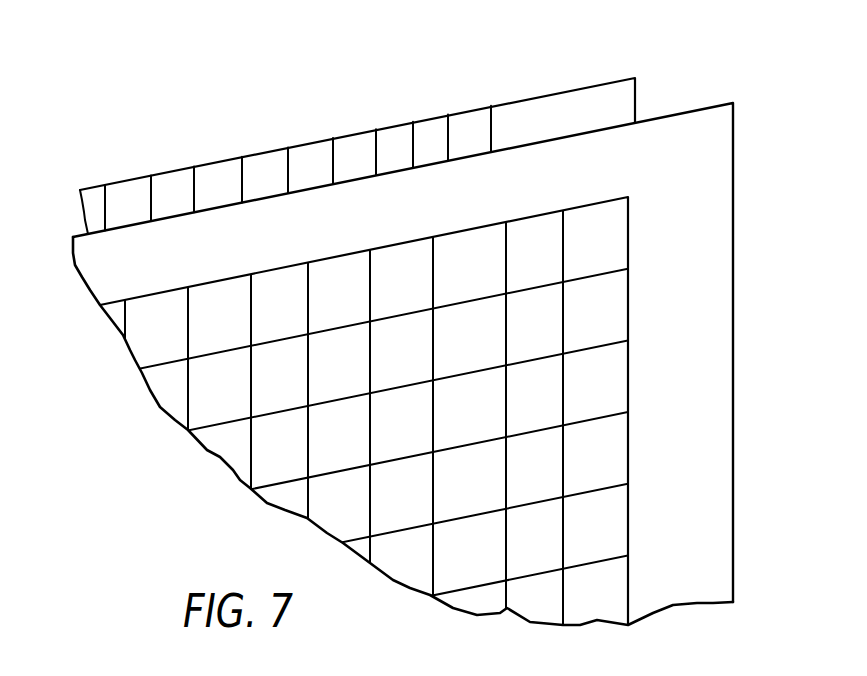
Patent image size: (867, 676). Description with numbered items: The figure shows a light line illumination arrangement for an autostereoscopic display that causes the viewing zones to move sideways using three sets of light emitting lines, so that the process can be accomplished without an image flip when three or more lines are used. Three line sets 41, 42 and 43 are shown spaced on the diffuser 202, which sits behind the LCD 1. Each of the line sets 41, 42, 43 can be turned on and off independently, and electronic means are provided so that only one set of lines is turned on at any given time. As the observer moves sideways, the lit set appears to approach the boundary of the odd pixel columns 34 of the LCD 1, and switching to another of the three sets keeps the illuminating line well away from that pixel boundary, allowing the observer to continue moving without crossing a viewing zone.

The LCD 1 is at (717, 425).
The diffuser 202 is at (610, 93).
The line set 41 is at (105, 185).
The line set 42 is at (194, 166).
The line set 43 is at (151, 175).
The odd pixel columns 34 is at (288, 147).